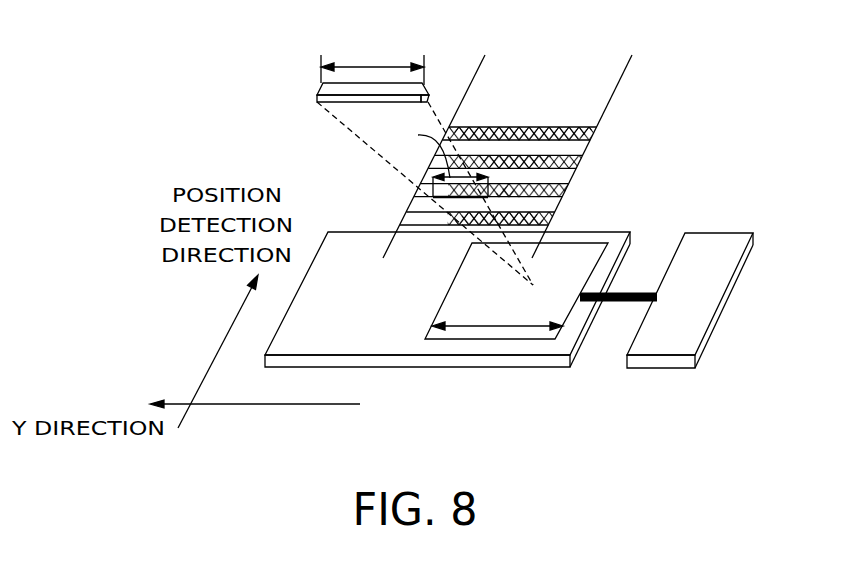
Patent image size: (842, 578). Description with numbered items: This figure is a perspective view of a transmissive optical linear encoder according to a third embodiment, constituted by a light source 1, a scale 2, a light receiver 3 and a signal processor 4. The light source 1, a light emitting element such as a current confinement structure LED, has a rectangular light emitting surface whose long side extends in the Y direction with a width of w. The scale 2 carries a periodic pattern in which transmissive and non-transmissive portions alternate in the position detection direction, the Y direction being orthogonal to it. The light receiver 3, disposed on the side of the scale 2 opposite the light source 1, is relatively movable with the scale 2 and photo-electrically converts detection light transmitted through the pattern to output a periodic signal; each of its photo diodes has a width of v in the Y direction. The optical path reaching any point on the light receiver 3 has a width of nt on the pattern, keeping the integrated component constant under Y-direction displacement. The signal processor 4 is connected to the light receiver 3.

The light source 1 is at (368, 99).
The scale 2 is at (597, 105).
The light receiver 3 is at (577, 250).
The signal processor 4 is at (705, 250).